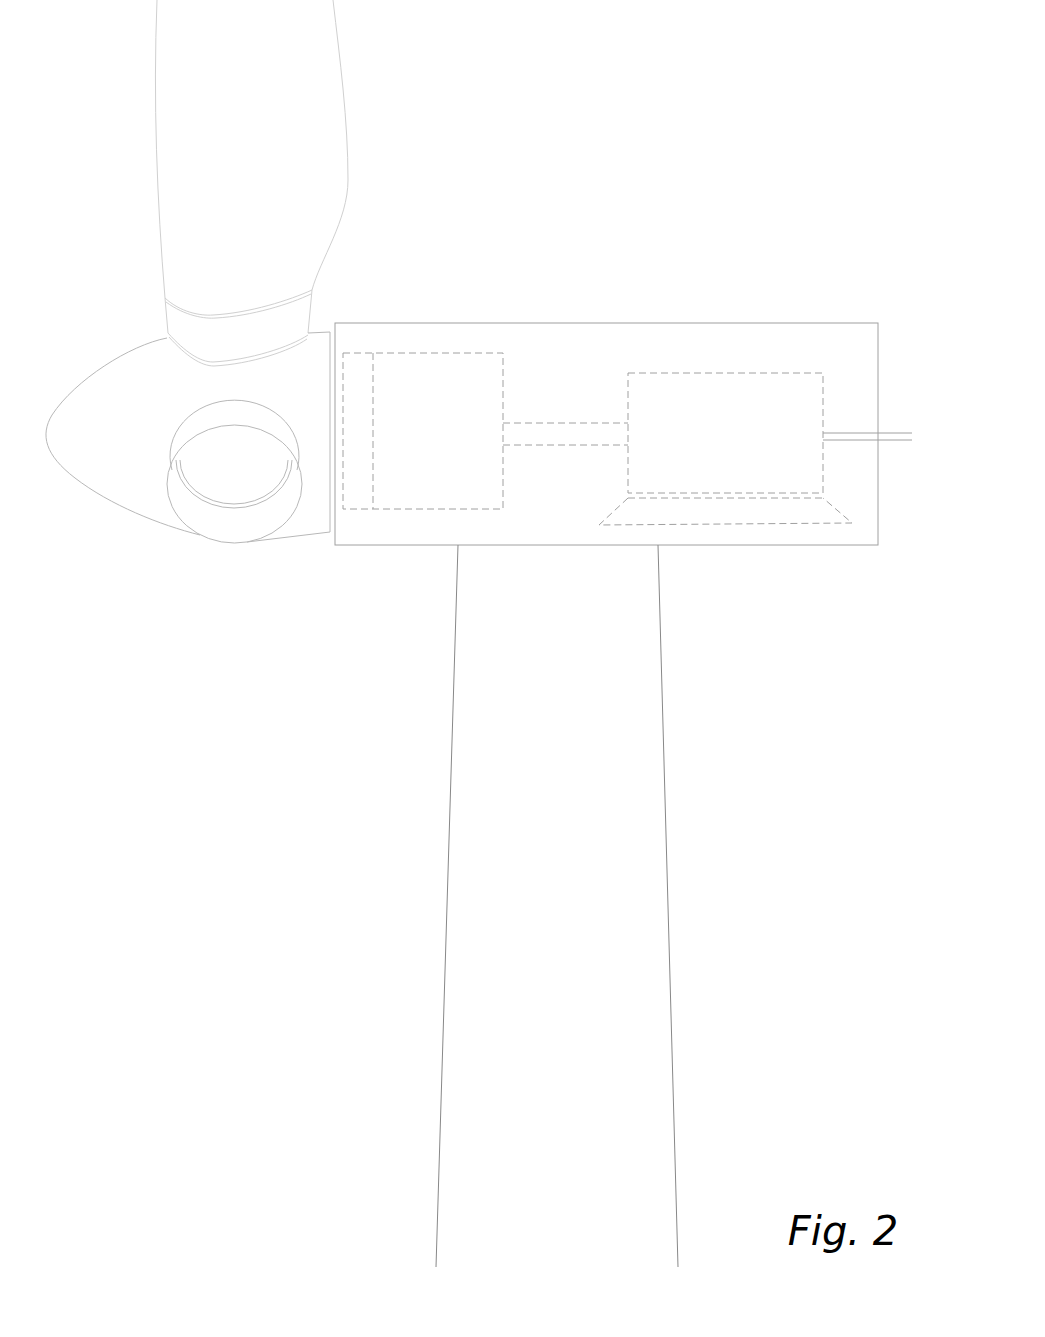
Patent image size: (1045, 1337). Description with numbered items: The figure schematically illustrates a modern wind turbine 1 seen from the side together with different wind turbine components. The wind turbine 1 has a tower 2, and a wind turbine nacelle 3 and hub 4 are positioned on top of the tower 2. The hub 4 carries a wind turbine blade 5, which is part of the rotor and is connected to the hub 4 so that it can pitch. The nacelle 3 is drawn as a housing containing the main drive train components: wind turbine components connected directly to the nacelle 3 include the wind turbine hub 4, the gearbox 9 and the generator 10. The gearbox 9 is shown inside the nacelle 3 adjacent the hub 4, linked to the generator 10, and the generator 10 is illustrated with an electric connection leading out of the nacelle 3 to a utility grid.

The wind turbine 1 is at (343, 1056).
The tower 2 is at (643, 870).
The nacelle 3 is at (592, 337).
The hub 4 is at (128, 483).
The wind turbine blade 5 is at (323, 153).
The gearbox 9 is at (448, 367).
The generator 10 is at (732, 385).